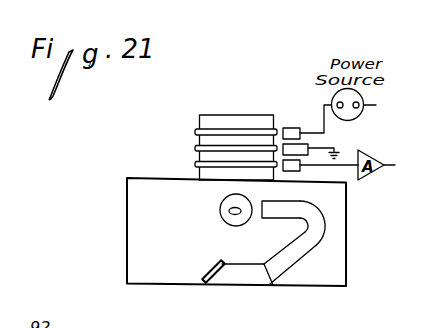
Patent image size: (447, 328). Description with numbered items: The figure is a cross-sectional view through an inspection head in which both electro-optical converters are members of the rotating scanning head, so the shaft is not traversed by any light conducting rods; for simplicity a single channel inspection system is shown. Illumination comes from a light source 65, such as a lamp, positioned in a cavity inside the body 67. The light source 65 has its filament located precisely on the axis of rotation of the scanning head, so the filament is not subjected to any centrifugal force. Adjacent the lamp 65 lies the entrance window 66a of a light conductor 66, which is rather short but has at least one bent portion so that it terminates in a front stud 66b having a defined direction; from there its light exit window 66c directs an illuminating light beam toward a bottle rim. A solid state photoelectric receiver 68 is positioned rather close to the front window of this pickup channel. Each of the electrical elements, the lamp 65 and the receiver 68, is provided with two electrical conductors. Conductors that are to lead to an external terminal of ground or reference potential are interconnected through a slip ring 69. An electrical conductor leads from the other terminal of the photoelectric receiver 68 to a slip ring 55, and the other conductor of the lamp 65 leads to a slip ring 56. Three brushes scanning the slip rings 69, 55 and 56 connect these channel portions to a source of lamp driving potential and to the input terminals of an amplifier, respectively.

The slip ring 55 is at (196, 164).
The slip ring 56 is at (196, 131).
The slip ring 69 is at (196, 148).
The light source 65 is at (224, 201).
The light conductor 66 is at (318, 218).
The entrance window 66a is at (263, 201).
The front stud 66b is at (292, 270).
The light exit window 66c is at (262, 284).
The body 67 is at (337, 242).
The solid state photoelectric receiver 68 is at (214, 284).